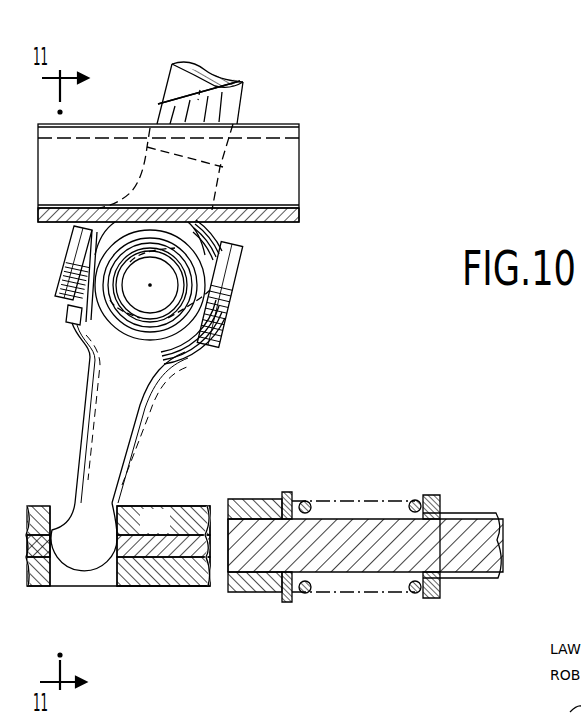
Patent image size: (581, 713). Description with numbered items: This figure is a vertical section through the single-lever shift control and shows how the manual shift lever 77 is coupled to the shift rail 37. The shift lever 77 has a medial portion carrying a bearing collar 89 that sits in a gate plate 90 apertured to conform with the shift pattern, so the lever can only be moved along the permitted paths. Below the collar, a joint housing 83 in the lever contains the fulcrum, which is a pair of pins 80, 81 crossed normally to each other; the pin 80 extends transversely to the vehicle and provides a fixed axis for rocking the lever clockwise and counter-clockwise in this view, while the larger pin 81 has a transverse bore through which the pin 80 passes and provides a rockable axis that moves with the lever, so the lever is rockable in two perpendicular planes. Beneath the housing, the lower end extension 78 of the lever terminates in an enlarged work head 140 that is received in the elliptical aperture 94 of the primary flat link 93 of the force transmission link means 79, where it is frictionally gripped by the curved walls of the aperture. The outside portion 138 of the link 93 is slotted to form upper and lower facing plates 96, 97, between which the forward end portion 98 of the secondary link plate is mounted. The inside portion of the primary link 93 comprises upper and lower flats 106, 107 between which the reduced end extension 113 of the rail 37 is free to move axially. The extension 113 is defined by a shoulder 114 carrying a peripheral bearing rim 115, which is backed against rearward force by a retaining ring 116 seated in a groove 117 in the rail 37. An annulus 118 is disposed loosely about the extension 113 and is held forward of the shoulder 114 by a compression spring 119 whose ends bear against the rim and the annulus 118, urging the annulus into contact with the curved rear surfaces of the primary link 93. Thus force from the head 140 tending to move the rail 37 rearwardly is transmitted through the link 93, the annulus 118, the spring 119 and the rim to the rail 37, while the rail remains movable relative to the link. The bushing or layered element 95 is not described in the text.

The shift rail 37 is at (485, 512).
The manual shift lever 77 is at (196, 64).
The lower end extension 78 is at (148, 416).
The force transmission link means 79 is at (38, 500).
The pin 80 is at (150, 297).
The pin 81 is at (240, 293).
The joint housing 83 is at (228, 233).
The bearing collar 89 is at (158, 101).
The gate plate 90 is at (299, 126).
The primary flat link 93 is at (163, 521).
The aperture 94 is at (105, 590).
The rubber insert 95 is at (33, 550).
The upper facing plate 96 is at (128, 506).
The lower facing plate 97 is at (137, 582).
The forward end portion 98 is at (155, 548).
The upper flat 106 is at (270, 498).
The lower flat 107 is at (268, 593).
The reduced end extension 113 is at (353, 565).
The shoulder 114 is at (428, 495).
The peripheral bearing rim 115 is at (423, 603).
The retaining ring 116 is at (437, 602).
The groove 117 is at (446, 518).
The annulus 118 is at (294, 492).
The compression spring 119 is at (412, 502).
The outside portion 138 is at (44, 589).
The work head 140 is at (82, 565).